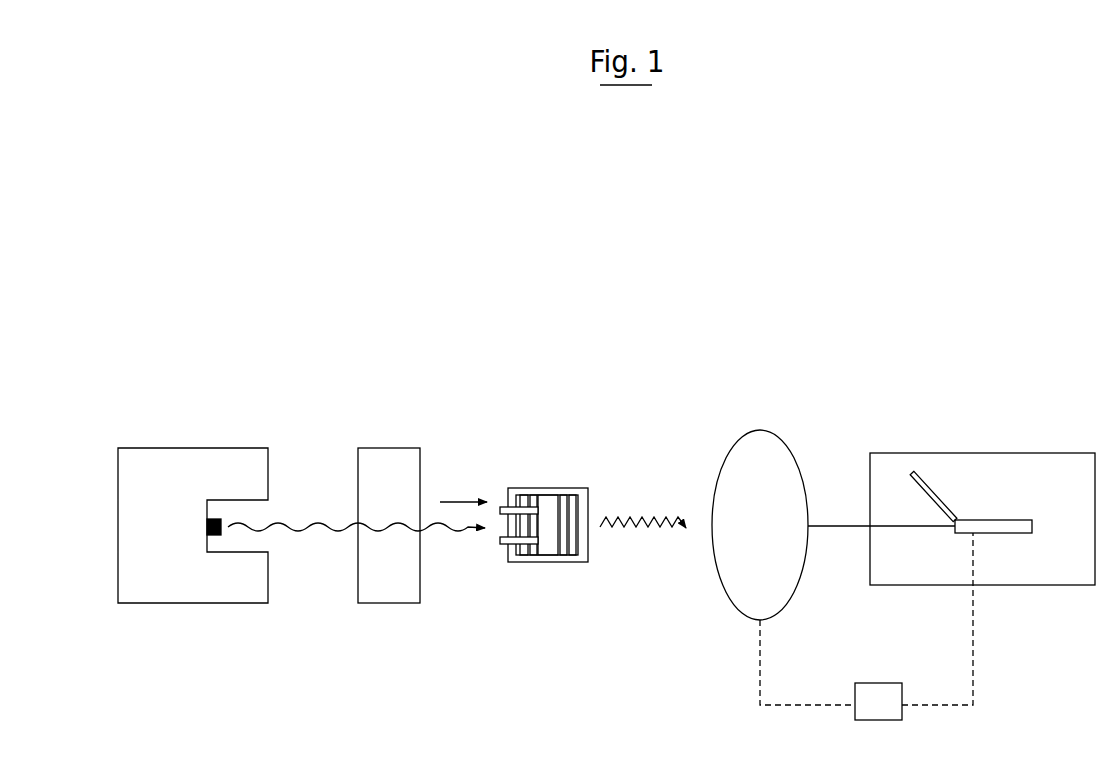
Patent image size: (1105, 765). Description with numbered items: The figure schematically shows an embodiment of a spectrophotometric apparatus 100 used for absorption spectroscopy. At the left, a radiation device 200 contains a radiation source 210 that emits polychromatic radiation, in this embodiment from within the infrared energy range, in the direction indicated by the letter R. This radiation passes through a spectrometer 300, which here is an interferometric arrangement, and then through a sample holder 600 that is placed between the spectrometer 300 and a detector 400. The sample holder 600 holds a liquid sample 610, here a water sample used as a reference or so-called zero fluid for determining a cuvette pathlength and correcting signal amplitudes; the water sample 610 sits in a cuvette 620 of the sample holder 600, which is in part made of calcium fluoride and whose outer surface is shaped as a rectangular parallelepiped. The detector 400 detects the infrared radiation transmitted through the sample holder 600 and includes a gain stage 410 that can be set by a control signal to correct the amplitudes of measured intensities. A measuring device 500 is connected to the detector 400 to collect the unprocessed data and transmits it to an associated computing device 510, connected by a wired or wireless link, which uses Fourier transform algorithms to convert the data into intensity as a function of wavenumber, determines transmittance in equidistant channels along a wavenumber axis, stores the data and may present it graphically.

The spectrophotometric apparatus 100 is at (208, 286).
The radiation device 200 is at (170, 442).
The radiation source 210 is at (200, 517).
The spectrometer 300 is at (390, 432).
The sample holder 600 is at (533, 522).
The liquid sample 610 is at (551, 537).
The cuvette 620 is at (503, 566).
The detector 400 is at (758, 418).
The gain stage 410 is at (866, 626).
The measuring device 500 is at (938, 443).
The computing device 510 is at (992, 547).